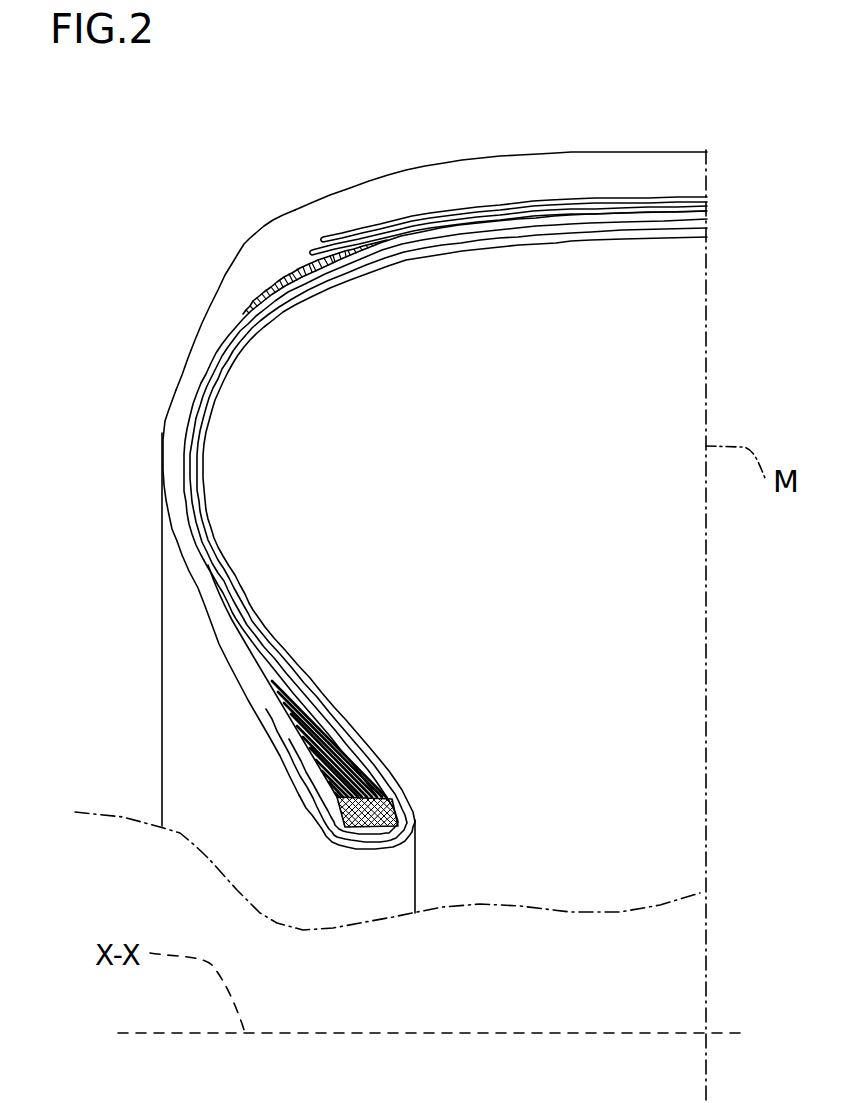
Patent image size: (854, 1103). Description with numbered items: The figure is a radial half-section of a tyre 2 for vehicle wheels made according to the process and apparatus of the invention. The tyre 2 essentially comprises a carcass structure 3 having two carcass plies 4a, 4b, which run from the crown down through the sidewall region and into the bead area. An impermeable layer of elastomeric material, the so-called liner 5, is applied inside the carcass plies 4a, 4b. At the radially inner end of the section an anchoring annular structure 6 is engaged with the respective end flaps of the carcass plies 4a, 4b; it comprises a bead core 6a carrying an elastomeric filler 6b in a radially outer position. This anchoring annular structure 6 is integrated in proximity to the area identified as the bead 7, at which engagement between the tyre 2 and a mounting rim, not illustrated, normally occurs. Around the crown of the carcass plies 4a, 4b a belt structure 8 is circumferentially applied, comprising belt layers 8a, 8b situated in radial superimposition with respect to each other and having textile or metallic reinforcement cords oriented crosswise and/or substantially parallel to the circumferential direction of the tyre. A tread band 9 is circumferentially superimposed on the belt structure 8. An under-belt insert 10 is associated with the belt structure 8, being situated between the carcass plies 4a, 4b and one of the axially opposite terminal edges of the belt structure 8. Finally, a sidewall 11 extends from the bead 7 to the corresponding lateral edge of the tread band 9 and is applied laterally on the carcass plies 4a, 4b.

The tyre 2 is at (212, 178).
The carcass structure 3 is at (182, 438).
The carcass ply 4a is at (273, 577).
The carcass ply 4b is at (273, 577).
The liner 5 is at (338, 277).
The anchoring annular structure 6 is at (350, 743).
The bead core 6a is at (397, 807).
The elastomeric filler 6b is at (333, 758).
The bead 7 is at (397, 772).
The belt structure 8 is at (668, 195).
The belt layer 8a is at (385, 222).
The belt layer 8b is at (398, 223).
The tread band 9 is at (606, 175).
The under-belt insert 10 is at (294, 258).
The sidewall 11 is at (187, 377).